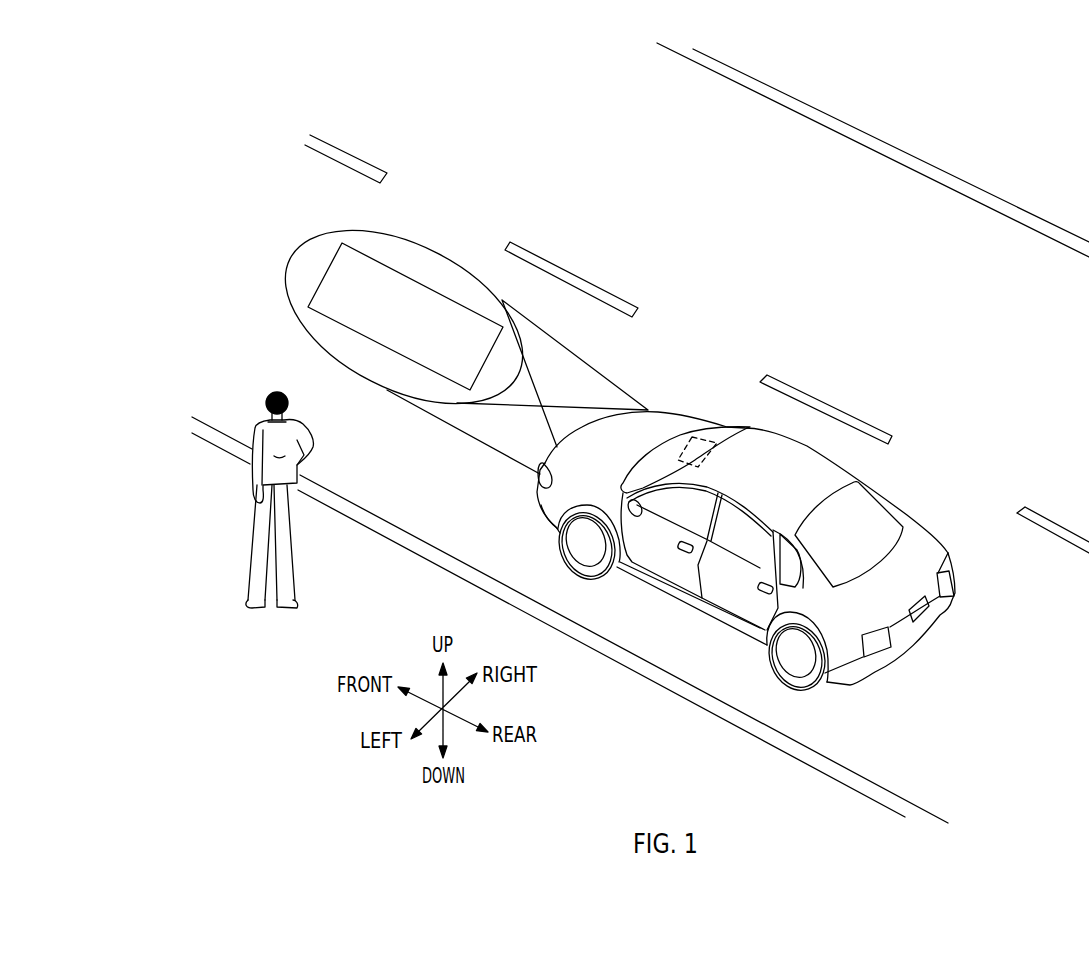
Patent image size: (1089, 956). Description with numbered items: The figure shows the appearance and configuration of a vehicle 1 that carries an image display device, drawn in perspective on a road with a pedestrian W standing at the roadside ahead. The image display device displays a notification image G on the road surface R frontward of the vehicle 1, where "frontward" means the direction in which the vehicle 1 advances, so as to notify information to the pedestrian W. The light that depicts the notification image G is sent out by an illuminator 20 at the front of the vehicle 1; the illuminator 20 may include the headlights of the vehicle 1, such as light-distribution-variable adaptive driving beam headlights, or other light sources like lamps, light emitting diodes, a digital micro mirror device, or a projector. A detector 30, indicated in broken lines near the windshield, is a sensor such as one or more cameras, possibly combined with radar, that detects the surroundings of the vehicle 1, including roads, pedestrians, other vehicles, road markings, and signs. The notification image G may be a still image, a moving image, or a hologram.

The vehicle 1 is at (757, 475).
The illuminator 20 is at (536, 478).
The detector 30 is at (689, 428).
The notification image G is at (382, 262).
The road surface R is at (223, 356).
The pedestrian W is at (252, 552).